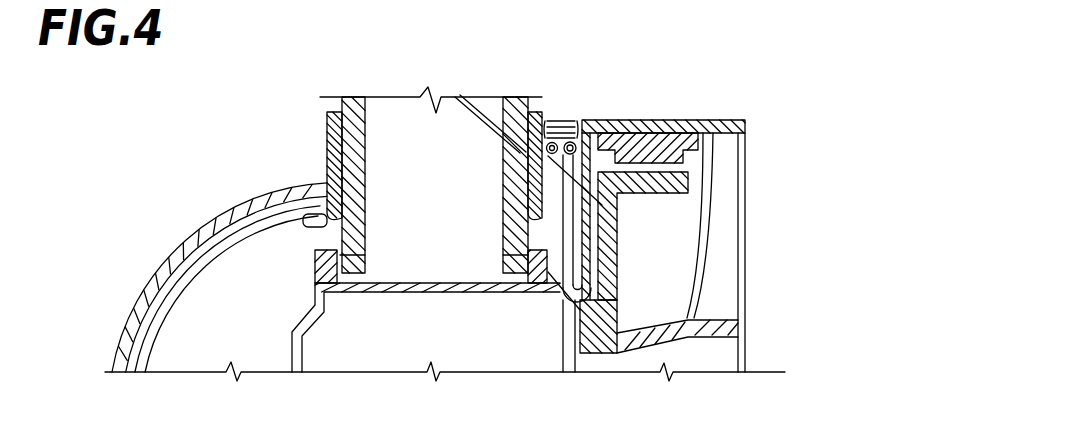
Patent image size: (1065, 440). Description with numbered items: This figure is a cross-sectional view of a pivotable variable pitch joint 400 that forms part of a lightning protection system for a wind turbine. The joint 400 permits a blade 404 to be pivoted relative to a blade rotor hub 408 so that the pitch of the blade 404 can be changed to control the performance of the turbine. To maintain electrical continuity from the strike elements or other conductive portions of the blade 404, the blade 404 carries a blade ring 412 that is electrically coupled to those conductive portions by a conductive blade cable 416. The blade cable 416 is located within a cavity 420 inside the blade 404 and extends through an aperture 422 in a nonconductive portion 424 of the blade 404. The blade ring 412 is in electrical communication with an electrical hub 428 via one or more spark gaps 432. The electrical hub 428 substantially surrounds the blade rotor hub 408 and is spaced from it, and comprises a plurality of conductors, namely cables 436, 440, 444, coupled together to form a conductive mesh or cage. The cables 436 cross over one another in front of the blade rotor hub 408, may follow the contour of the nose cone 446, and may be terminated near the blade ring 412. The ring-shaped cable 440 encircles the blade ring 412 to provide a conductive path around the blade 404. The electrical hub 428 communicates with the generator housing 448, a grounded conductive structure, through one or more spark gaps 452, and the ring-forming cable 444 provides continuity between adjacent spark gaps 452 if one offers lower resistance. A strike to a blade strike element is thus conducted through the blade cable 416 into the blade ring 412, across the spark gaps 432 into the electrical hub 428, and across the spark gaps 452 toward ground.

The pivotable variable pitch joint 400 is at (310, 264).
The blade 404 is at (336, 101).
The blade rotor hub 408 is at (290, 341).
The blade ring 412 is at (326, 141).
The blade cable 416 is at (458, 108).
The cavity 420 is at (455, 255).
The aperture 422 is at (502, 149).
The nonconductive portion 424 is at (518, 96).
The electrical hub 428 is at (173, 264).
The spark gaps 432 is at (318, 190).
The cables 436 is at (157, 324).
The cable 440 is at (614, 196).
The cable 444 is at (561, 297).
The nose cone 446 is at (133, 305).
The generator housing 448 is at (706, 120).
The spark gaps 452 is at (584, 120).